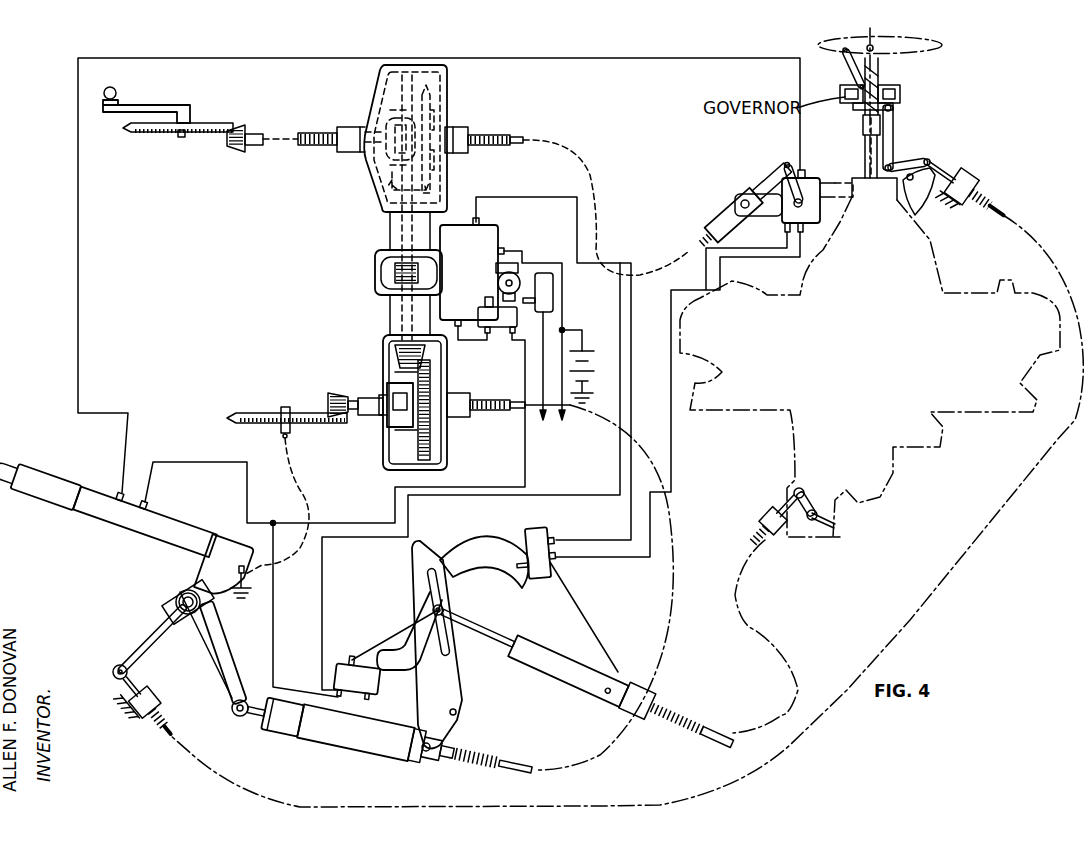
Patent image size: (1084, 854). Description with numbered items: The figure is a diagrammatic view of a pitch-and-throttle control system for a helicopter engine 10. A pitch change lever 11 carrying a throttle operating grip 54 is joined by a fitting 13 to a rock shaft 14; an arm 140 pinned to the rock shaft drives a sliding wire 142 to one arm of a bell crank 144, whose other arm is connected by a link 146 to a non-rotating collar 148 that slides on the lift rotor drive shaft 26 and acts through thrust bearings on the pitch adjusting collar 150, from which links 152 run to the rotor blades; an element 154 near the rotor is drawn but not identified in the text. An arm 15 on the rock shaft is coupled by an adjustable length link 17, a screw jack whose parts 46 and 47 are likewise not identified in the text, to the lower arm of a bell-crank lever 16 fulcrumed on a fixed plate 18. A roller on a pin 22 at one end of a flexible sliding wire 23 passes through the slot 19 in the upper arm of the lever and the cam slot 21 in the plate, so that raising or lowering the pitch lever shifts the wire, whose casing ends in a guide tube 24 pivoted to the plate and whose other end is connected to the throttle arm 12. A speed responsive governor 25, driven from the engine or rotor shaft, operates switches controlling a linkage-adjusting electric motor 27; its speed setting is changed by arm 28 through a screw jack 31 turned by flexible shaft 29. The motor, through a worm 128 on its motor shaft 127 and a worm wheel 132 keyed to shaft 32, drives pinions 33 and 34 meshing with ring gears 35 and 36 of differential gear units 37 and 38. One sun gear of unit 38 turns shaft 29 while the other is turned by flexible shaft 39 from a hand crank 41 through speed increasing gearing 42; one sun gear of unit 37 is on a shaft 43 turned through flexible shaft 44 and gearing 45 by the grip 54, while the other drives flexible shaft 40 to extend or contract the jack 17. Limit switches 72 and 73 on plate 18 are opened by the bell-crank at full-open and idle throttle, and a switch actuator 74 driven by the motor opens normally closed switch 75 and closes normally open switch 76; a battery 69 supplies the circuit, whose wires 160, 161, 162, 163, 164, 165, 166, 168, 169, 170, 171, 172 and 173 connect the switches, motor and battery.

The helicopter engine 10 is at (680, 365).
The pitch change lever 11 is at (165, 520).
The throttle arm 12 is at (830, 510).
The fitting 13 is at (196, 570).
The rock shaft 14 is at (176, 597).
The arm 15 is at (208, 630).
The bell-crank lever 16 is at (458, 694).
The adjustable length link 17 is at (341, 751).
The fixed plate 18 is at (398, 622).
The slot 19 is at (452, 650).
The cam slot 21 is at (480, 575).
The pin 22 is at (432, 604).
The flexible sliding wire 23 is at (570, 600).
The guide tube 24 is at (645, 680).
The speed responsive governor 25 is at (810, 178).
The lift rotor drive shaft 26 is at (898, 164).
The linkage-adjusting electric motor 27 is at (500, 232).
The arm 28 is at (792, 162).
The flexible shaft 29 is at (514, 145).
The screw jack 31 is at (722, 200).
The shaft 32 is at (382, 243).
The pinion 33 is at (397, 350).
The pinion 34 is at (382, 190).
The ring gear 35 is at (432, 380).
The ring gear 36 is at (432, 108).
The differential gear unit 37 is at (382, 417).
The differential gear unit 38 is at (385, 122).
The flexible shaft 39 is at (310, 146).
The flexible shaft 40 is at (470, 398).
The hand crank 41 is at (157, 104).
The speed increasing gearing 42 is at (227, 138).
The shaft 43 is at (342, 394).
The flexible shaft 44 is at (318, 512).
The speed increasing gearing 45 is at (292, 410).
The cylinder barrel 46 is at (389, 752).
The cylinder cap 47 is at (280, 733).
The throttle operating grip 54 is at (72, 485).
The battery 69 is at (594, 371).
The switch 72 is at (548, 536).
The switch 73 is at (337, 670).
The switch actuator 74 is at (520, 280).
The switch 75 is at (503, 330).
The switch 76 is at (553, 290).
The motor shaft 127 is at (472, 282).
The worm 128 is at (382, 288).
The worm wheel 132 is at (395, 272).
The arm 140 is at (146, 634).
The sliding wire 142 is at (165, 730).
The bell crank 144 is at (912, 184).
The link 146 is at (893, 130).
The non-rotating collar 148 is at (905, 98).
The pitch adjusting collar 150 is at (884, 92).
The links 152 is at (852, 76).
The governor flyweight plane 154 is at (920, 41).
The wire 160 is at (586, 328).
The wire 161 is at (579, 443).
The wire 162 is at (540, 408).
The wire 163 is at (580, 315).
The wire 164 is at (516, 254).
The wire 165 is at (520, 197).
The wire 166 is at (670, 468).
The wire 168 is at (476, 58).
The wire 169 is at (239, 594).
The wire 170 is at (170, 462).
The wire 171 is at (273, 612).
The wire 172 is at (452, 493).
The wire 173 is at (432, 366).